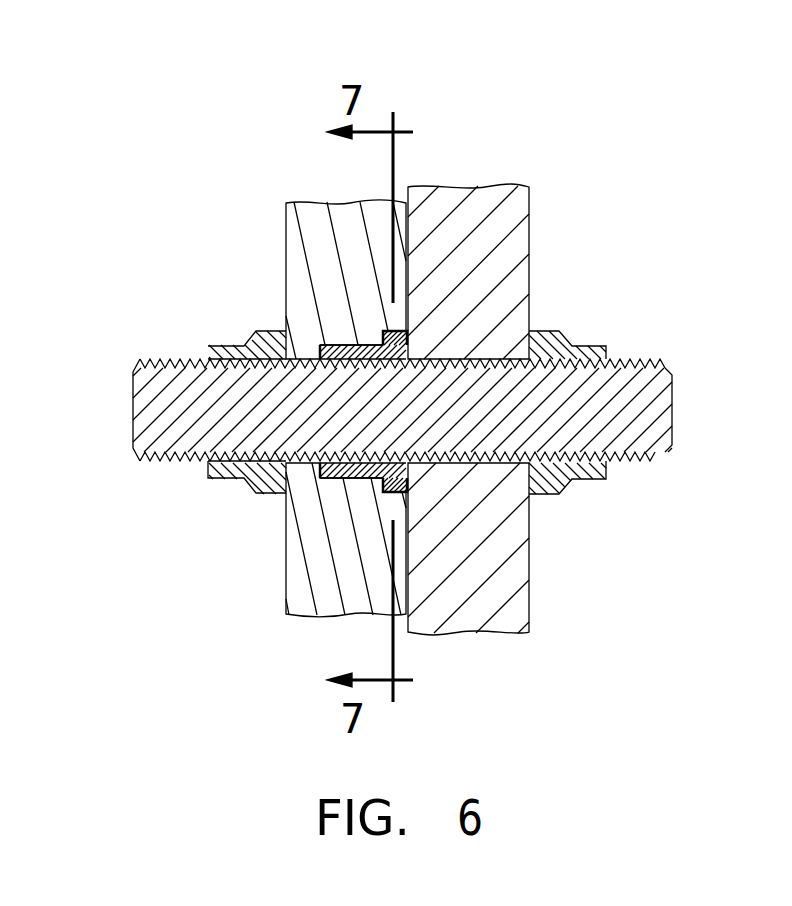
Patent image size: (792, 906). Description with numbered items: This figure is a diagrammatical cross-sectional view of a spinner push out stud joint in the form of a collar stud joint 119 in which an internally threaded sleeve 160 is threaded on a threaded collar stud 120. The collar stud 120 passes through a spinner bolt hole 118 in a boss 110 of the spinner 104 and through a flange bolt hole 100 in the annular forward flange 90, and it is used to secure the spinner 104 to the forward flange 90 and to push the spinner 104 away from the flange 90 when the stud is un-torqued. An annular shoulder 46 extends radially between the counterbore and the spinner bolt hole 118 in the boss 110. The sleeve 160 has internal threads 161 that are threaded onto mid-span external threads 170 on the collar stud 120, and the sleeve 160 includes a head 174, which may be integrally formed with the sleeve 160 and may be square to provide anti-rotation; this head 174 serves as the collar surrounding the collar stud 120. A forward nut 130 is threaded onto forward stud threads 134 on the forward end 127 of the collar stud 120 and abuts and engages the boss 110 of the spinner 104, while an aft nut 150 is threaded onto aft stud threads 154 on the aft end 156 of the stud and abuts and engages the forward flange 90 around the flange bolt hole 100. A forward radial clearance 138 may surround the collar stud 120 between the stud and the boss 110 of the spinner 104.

The annular shoulder 46 is at (407, 342).
The forward flange 90 is at (445, 203).
The flange bolt hole 100 is at (501, 254).
The spinner 104 is at (350, 213).
The boss 110 is at (294, 261).
The spinner bolt hole 118 is at (263, 395).
The collar stud joint 119 is at (410, 426).
The threaded collar stud 120 is at (410, 455).
The forward end 127 is at (173, 463).
The forward nut 130 is at (283, 485).
The forward stud threads 134 is at (360, 471).
The forward radial clearance 138 is at (209, 504).
The aft nut 150 is at (590, 483).
The aft stud threads 154 is at (622, 358).
The aft end 156 is at (626, 430).
The threaded sleeve 160 is at (400, 468).
The internal threads 161 is at (307, 301).
The mid-span external threads 170 is at (320, 345).
The head 174 is at (407, 490).